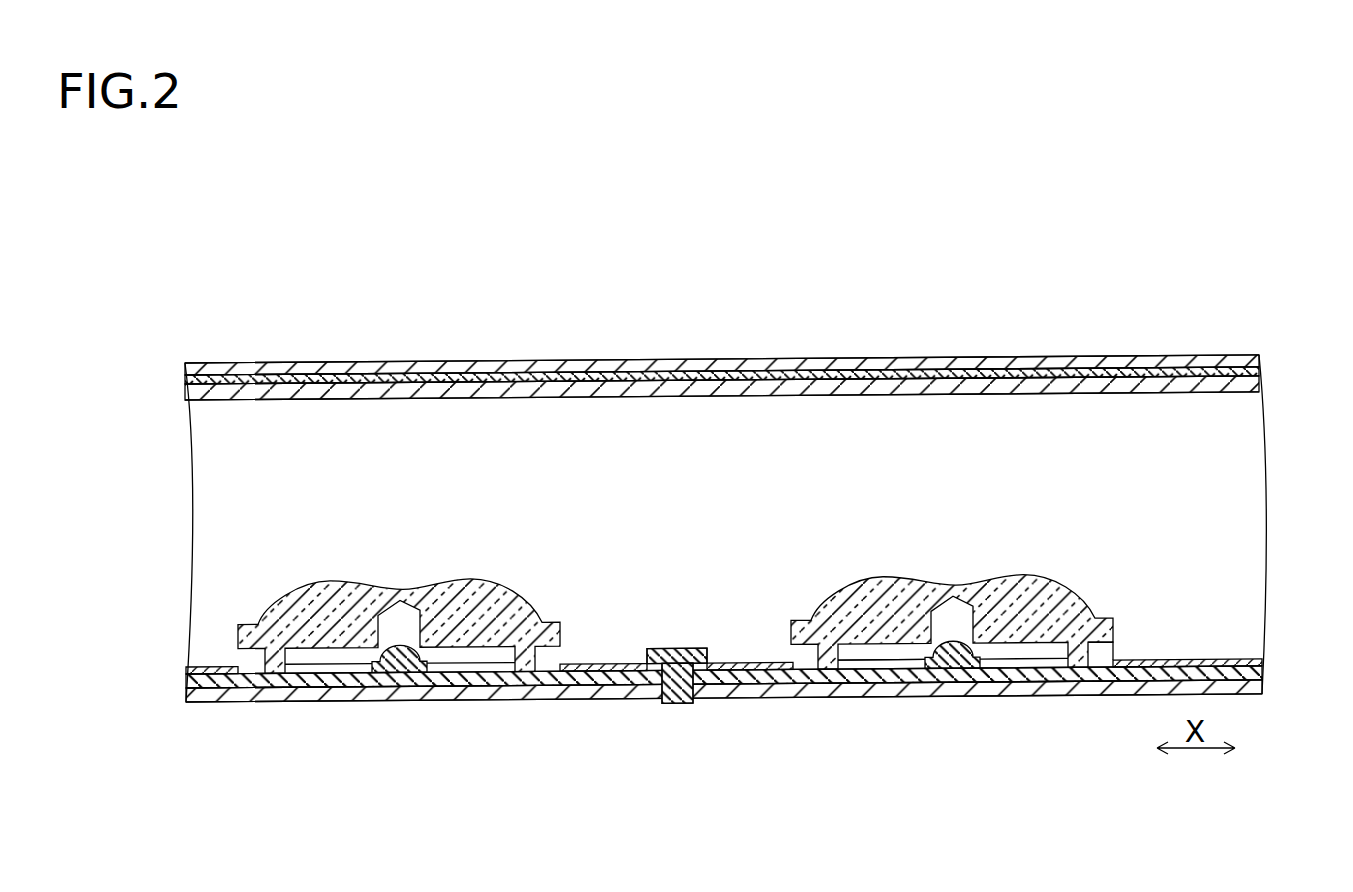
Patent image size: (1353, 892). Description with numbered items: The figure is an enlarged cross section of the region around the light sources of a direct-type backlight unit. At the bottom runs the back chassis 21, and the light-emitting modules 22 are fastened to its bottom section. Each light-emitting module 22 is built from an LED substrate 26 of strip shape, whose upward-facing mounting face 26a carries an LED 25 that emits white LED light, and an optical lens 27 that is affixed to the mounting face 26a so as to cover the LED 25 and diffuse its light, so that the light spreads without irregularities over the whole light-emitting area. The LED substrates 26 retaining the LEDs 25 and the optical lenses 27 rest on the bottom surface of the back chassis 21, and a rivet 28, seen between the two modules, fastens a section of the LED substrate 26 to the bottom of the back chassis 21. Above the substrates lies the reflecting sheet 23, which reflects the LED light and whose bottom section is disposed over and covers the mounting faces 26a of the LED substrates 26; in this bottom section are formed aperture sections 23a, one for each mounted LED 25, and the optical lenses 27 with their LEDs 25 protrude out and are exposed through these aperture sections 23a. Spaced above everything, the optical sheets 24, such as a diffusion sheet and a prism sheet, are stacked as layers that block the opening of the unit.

The back chassis 21 is at (1258, 688).
The light-emitting module 22 is at (680, 703).
The reflecting sheet 23 is at (1258, 662).
The aperture section 23a is at (1113, 659).
The optical sheet 24 is at (1263, 361).
The LED 25 is at (943, 662).
The LED substrate 26 is at (1013, 675).
The mounting face 26a is at (1033, 664).
The optical lens 27 is at (876, 642).
The rivet 28 is at (678, 704).